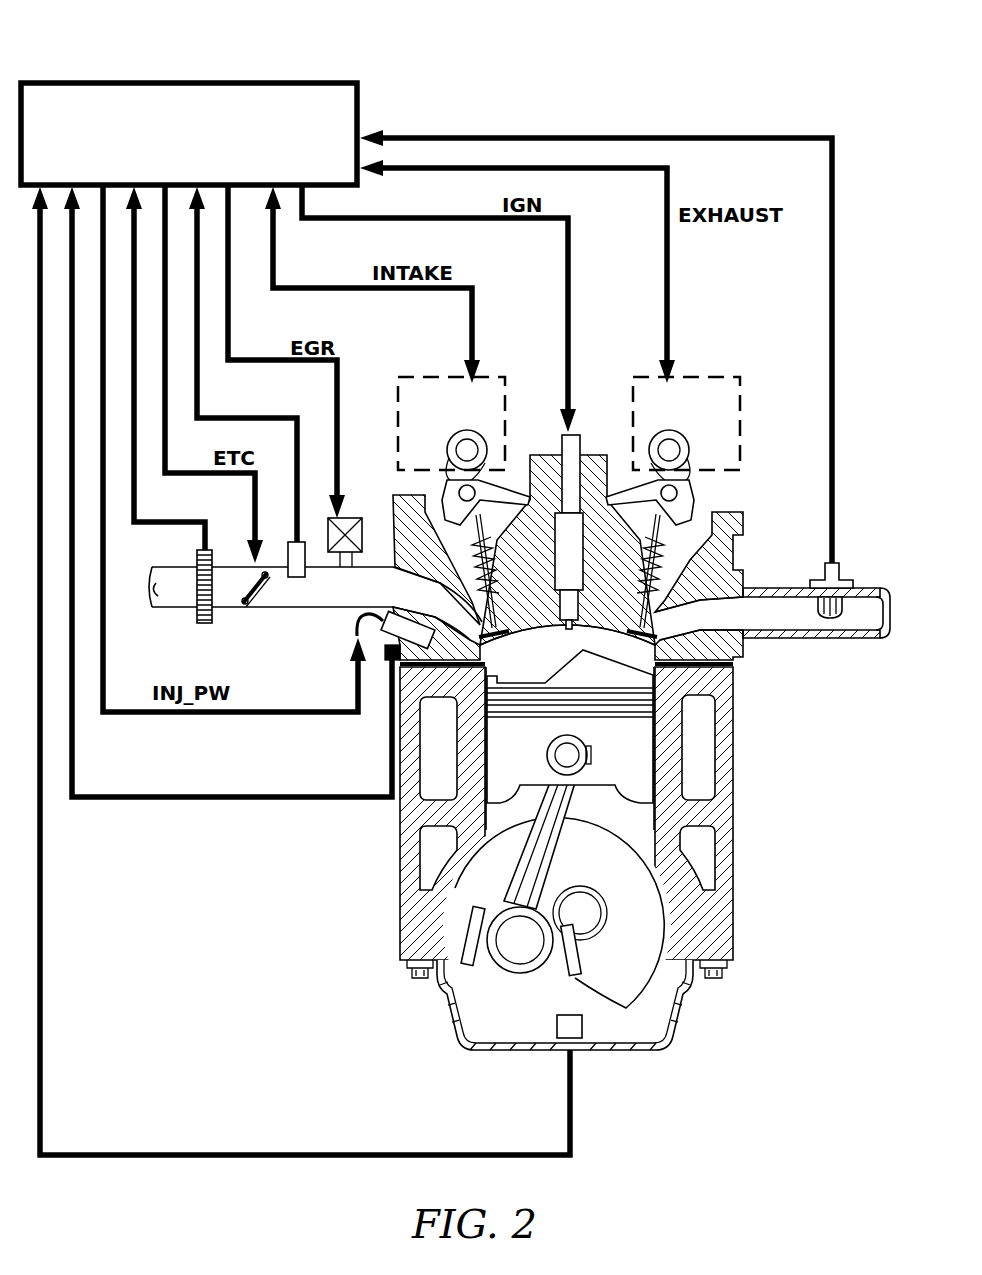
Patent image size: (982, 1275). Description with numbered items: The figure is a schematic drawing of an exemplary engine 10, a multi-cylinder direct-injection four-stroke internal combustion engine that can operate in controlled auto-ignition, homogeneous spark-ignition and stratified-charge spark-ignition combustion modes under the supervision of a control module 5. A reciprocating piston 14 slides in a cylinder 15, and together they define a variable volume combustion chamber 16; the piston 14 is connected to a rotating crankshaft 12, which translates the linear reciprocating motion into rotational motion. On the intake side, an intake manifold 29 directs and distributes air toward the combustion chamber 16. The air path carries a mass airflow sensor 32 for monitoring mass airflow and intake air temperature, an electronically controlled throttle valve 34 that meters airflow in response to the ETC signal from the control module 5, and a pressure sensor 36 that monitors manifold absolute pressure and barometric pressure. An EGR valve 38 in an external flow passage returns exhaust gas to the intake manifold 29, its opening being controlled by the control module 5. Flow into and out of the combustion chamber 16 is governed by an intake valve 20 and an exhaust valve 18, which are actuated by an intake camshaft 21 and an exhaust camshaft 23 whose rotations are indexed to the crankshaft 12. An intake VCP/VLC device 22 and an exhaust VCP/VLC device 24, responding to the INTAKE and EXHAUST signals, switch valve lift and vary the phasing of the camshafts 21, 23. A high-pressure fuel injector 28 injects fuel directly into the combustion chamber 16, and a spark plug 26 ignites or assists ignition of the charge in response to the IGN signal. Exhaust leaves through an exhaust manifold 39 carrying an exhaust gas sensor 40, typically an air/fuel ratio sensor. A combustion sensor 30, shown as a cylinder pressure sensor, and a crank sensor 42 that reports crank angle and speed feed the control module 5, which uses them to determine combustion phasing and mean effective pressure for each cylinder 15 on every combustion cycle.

The control module 5 is at (310, 85).
The engine 10 is at (734, 813).
The crankshaft 12 is at (628, 977).
The piston 14 is at (636, 770).
The cylinder 15 is at (663, 685).
The combustion chamber 16 is at (545, 675).
The exhaust valve 18 is at (639, 624).
The intake valve 20 is at (482, 606).
The intake camshaft 21 is at (468, 450).
The intake VCP/VLC device 22 is at (497, 388).
The exhaust camshaft 23 is at (672, 453).
The exhaust VCP/VLC device 24 is at (735, 440).
The spark plug 26 is at (577, 438).
The fuel injector 28 is at (355, 622).
The intake manifold 29 is at (372, 575).
The combustion sensor 30 is at (386, 662).
The mass airflow sensor 32 is at (200, 641).
The throttle valve 34 is at (250, 607).
The pressure sensor 36 is at (293, 578).
The EGR valve 38 is at (336, 553).
The exhaust manifold 39 is at (775, 588).
The exhaust gas sensor 40 is at (833, 576).
The crank sensor 42 is at (560, 1030).